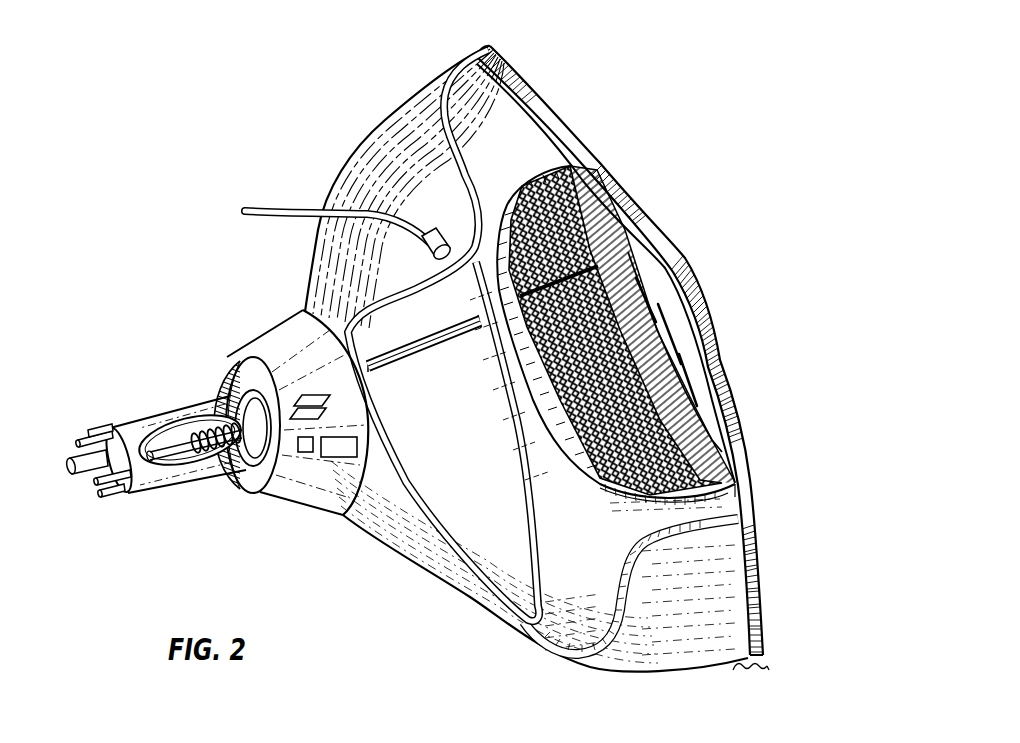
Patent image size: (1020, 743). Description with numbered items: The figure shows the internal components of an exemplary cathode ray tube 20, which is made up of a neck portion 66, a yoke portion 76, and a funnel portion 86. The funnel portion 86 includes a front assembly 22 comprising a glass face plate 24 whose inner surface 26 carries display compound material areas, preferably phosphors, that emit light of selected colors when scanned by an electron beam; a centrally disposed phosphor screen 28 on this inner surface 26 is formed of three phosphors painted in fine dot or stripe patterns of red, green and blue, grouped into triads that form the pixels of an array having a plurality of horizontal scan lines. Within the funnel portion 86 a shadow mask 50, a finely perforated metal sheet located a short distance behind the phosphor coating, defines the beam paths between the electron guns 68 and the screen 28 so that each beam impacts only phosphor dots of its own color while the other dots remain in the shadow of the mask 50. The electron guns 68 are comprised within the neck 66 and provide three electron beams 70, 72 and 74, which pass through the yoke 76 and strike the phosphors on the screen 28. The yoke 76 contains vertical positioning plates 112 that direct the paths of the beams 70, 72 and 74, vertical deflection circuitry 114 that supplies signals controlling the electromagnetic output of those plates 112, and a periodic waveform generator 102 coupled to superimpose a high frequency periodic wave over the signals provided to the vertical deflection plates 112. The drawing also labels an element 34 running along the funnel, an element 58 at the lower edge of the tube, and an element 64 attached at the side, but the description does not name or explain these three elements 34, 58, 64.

The cathode ray tube 20 is at (428, 569).
The front assembly 22 is at (751, 685).
The glass face plate 24 is at (565, 122).
The inner surface 26 is at (662, 310).
The phosphor screen 28 is at (598, 266).
The strap 34 is at (462, 64).
The shadow mask 50 is at (540, 177).
The chin lip 58 is at (553, 632).
The oxygen tube 64 is at (262, 208).
The neck portion 66 is at (172, 410).
The electron guns 68 is at (194, 452).
The electron beam 70 is at (253, 478).
The electron beam 72 is at (243, 402).
The electron beam 74 is at (236, 392).
The yoke portion 76 is at (278, 333).
The funnel portion 86 is at (372, 158).
The periodic waveform generator 102 is at (305, 453).
The vertical positioning plates 112 is at (333, 404).
The vertical deflection circuitry 114 is at (338, 458).